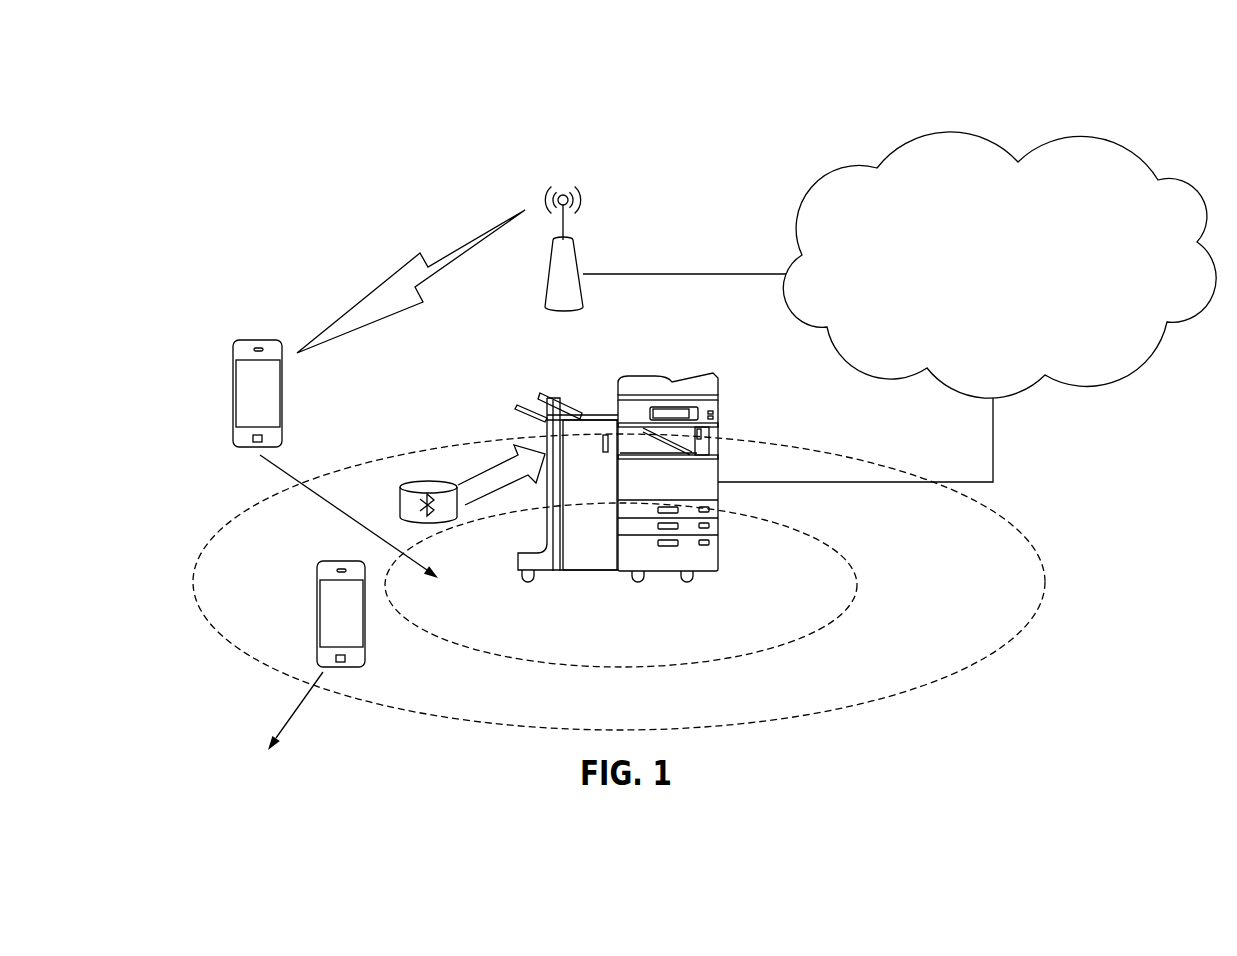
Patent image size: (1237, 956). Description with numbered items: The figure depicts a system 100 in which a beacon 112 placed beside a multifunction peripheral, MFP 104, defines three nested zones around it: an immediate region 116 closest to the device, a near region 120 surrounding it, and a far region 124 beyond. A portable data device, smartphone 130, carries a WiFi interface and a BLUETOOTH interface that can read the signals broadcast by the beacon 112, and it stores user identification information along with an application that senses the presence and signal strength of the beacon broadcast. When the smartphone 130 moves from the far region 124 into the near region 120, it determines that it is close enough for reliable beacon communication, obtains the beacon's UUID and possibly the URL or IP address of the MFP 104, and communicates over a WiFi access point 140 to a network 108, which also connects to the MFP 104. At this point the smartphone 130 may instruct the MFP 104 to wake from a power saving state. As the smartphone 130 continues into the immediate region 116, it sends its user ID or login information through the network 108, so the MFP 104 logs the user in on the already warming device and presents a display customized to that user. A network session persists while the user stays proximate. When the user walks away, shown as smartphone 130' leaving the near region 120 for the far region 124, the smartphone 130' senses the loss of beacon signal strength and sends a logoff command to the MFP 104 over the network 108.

The system 100 is at (1180, 148).
The MFP 104 is at (640, 374).
The network 108 is at (1080, 383).
The beacon 112 is at (413, 481).
The immediate region 116 is at (767, 603).
The near region 120 is at (937, 603).
The far region 124 is at (1114, 603).
The smartphone 130 is at (257, 366).
The smartphone 130' is at (308, 614).
The WiFi access point 140 is at (577, 258).